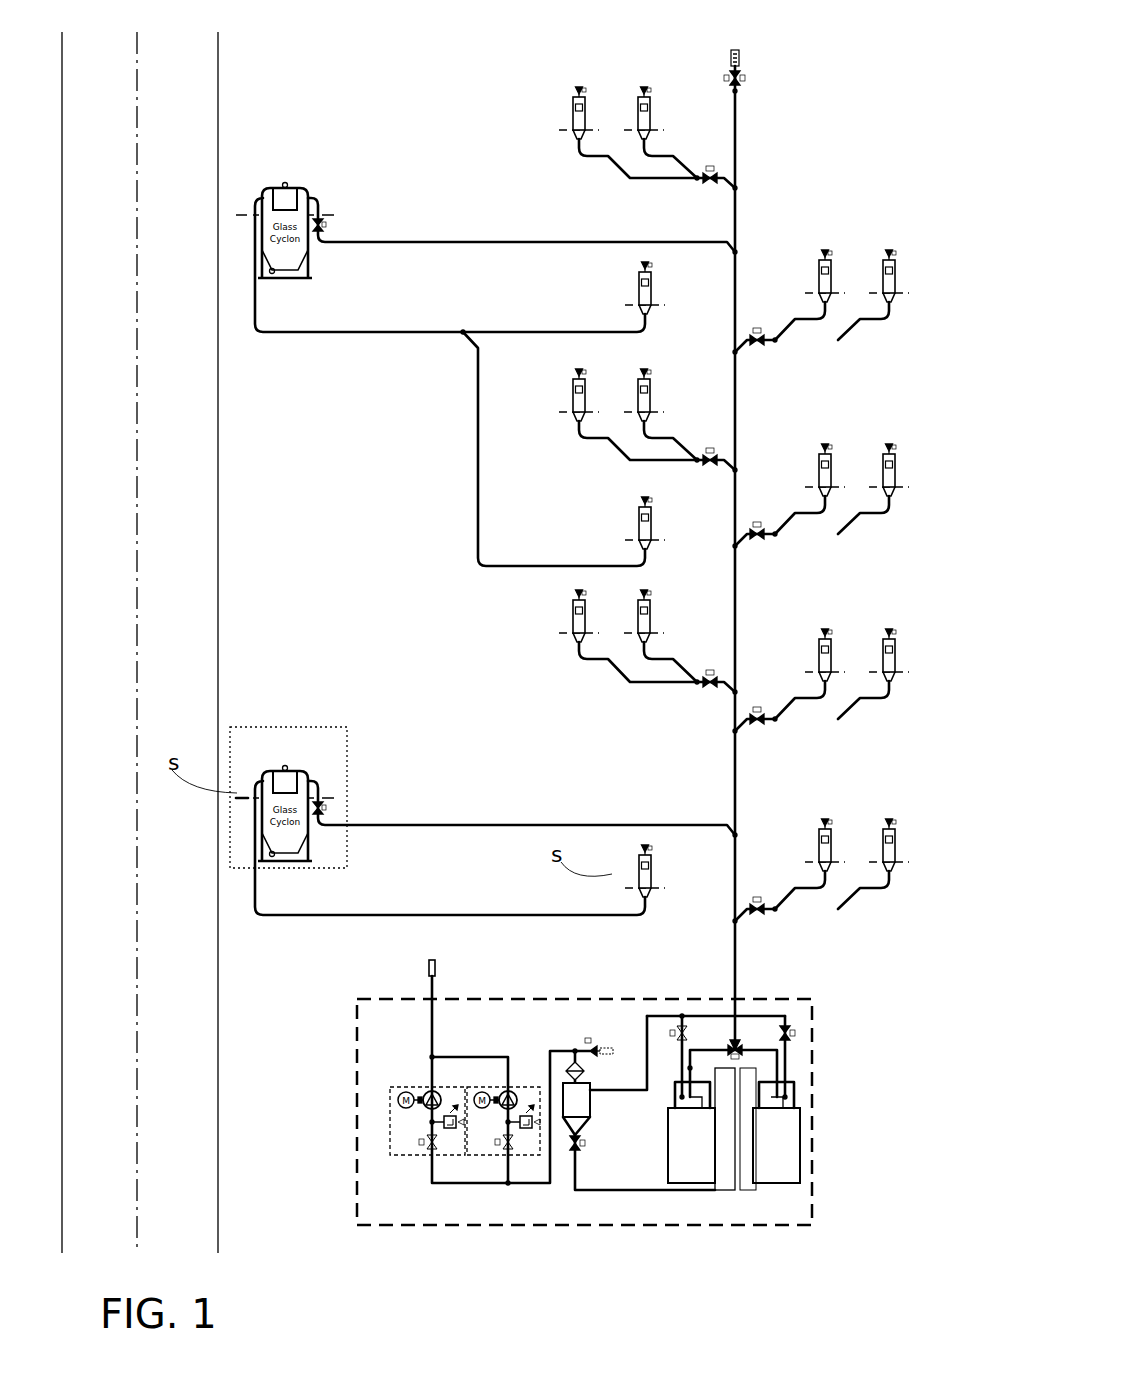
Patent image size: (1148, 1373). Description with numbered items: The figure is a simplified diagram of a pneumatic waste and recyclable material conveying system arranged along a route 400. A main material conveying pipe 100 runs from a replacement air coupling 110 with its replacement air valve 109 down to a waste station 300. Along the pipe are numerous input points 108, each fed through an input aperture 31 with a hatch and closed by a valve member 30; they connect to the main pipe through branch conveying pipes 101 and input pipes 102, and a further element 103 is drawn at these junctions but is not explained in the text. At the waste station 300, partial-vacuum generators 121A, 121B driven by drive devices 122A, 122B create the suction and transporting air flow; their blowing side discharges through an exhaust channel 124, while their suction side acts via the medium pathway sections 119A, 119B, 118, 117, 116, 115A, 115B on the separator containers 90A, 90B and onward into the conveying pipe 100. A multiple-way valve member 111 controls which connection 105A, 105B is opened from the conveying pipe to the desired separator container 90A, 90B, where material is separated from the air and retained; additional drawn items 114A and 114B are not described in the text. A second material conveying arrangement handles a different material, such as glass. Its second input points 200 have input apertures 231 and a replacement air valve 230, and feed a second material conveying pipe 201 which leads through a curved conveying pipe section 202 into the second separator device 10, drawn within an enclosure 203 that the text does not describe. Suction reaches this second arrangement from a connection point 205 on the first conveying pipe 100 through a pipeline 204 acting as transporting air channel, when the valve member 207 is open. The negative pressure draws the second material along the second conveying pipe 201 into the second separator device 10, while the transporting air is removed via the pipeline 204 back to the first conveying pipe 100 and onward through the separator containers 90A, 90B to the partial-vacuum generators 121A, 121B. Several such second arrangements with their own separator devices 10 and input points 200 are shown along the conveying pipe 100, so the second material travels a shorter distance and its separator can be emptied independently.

The second separator device 10 is at (252, 183).
The valve member 30 is at (898, 250).
The input aperture 31 is at (898, 265).
The material conveying pipe 100 is at (737, 474).
The branch conveying pipe 101 is at (778, 343).
The input pipe 102 is at (795, 320).
The branch valve 103 is at (757, 348).
The connection 105A is at (682, 1062).
The connection 105B is at (788, 1066).
The input point 108 is at (556, 86).
The replacement air valve 109 is at (746, 78).
The replacement air coupling 110 is at (740, 50).
The valve member 111 is at (741, 1047).
The first valve 114A is at (676, 1030).
The second valve 114B is at (792, 1032).
The medium pathway 115A is at (650, 1080).
The medium pathway 115B is at (780, 1075).
The medium pathway 116 is at (588, 1046).
The medium pathway 117 is at (573, 1156).
The medium pathway 118 is at (550, 1185).
The medium pathway 119A is at (432, 1160).
The medium pathway 119B is at (508, 1178).
The partial-vacuum generator 121A is at (430, 1090).
The partial-vacuum generator 121B is at (508, 1090).
The drive device 122A is at (398, 1098).
The drive device 122B is at (480, 1092).
The exhaust channel 124 is at (437, 966).
The second input point 200 is at (628, 274).
The second material conveying pipe 201 is at (323, 330).
The conveying pipe section 202 is at (253, 786).
The glass collection unit 203 is at (320, 784).
The pipeline 204 is at (448, 242).
The connection point 205 is at (737, 250).
The valve member 207 is at (330, 213).
The valve 230 is at (652, 266).
The input aperture 231 is at (652, 290).
The waste station 300 is at (480, 999).
The route 400 is at (163, 526).
The separator container 90A is at (666, 1160).
The separator container 90B is at (800, 1152).